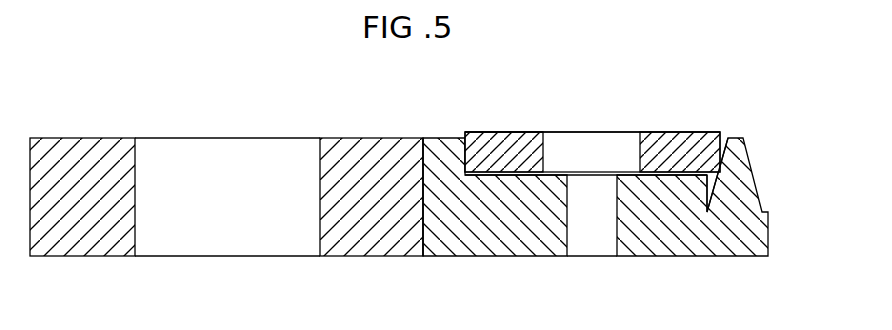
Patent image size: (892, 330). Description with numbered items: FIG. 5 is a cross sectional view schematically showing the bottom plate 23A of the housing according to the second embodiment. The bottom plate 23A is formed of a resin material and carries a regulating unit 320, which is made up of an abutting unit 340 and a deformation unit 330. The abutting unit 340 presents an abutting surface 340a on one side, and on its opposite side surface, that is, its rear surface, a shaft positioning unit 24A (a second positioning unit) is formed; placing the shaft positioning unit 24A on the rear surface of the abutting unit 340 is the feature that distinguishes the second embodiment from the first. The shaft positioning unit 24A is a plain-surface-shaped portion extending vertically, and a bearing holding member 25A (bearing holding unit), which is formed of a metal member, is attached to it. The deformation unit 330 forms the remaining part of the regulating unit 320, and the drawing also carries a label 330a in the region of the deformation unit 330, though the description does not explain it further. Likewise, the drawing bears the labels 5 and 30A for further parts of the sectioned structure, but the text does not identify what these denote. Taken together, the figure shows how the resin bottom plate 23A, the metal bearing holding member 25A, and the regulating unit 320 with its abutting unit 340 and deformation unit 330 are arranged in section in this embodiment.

The rail member 5 is at (656, 125).
The bottom plate 23A is at (498, 263).
The shaft positioning unit 24A is at (423, 147).
The bearing holding member 25A is at (376, 228).
The stepped block 30A is at (682, 263).
The regulating unit 320 is at (592, 153).
The deformation unit 330 is at (738, 177).
The protrusion of right rail segment 330a is at (708, 205).
The abutting unit 340 is at (443, 150).
The abutting surface 340a is at (483, 150).